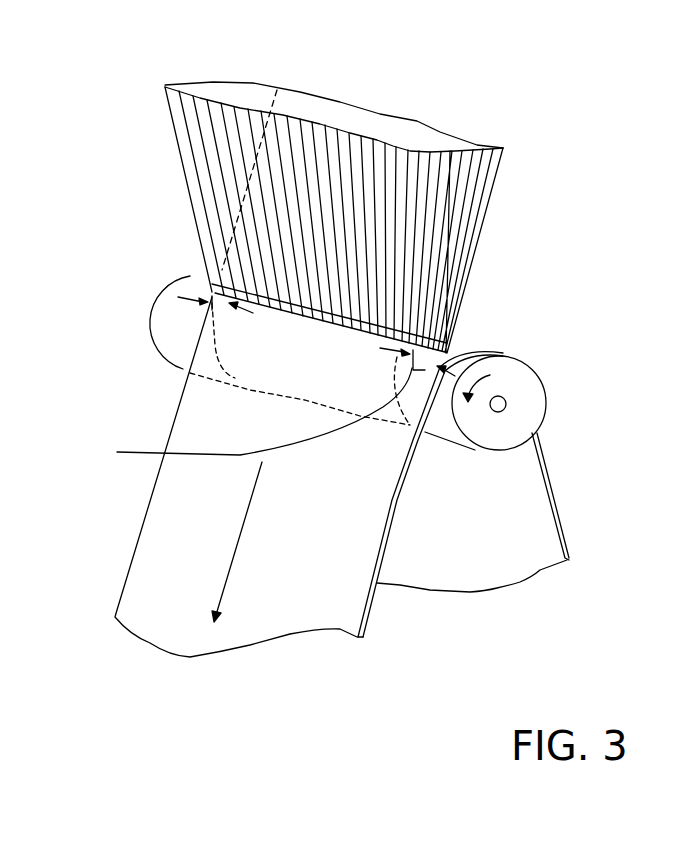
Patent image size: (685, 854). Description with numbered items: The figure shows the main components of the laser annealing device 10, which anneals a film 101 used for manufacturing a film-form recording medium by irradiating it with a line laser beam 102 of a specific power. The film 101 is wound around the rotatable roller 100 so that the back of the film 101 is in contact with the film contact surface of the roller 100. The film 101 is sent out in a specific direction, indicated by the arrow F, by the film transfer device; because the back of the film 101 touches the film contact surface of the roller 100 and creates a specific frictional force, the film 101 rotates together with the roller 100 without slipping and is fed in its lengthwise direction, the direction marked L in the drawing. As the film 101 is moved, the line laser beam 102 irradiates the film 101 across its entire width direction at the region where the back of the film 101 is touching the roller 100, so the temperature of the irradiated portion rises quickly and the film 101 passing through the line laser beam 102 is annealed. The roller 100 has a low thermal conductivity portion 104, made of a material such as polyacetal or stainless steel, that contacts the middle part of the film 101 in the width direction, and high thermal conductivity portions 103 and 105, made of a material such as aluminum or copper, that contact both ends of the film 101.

The laser annealing device 10 is at (607, 76).
The roller 100 is at (515, 387).
The film 101 is at (150, 597).
The line laser beam 102 is at (452, 234).
The high thermal conductivity portion 103 is at (173, 322).
The low thermal conductivity portion 104 is at (455, 283).
The high thermal conductivity portion 105 is at (437, 423).
The length direction L is at (212, 297).
The arrow F (film feed direction) F is at (230, 587).